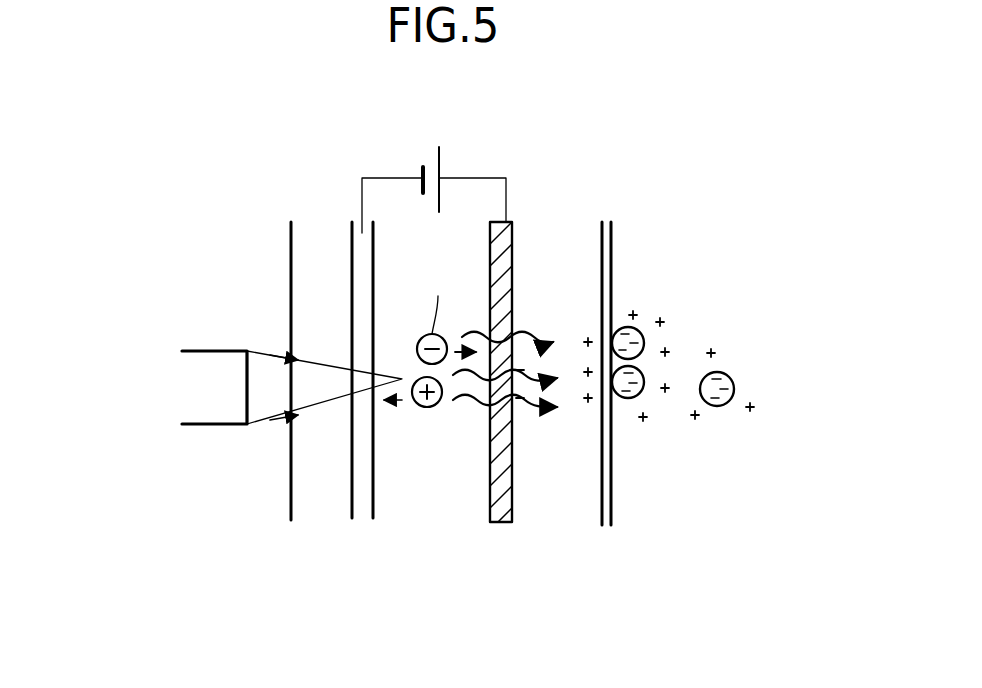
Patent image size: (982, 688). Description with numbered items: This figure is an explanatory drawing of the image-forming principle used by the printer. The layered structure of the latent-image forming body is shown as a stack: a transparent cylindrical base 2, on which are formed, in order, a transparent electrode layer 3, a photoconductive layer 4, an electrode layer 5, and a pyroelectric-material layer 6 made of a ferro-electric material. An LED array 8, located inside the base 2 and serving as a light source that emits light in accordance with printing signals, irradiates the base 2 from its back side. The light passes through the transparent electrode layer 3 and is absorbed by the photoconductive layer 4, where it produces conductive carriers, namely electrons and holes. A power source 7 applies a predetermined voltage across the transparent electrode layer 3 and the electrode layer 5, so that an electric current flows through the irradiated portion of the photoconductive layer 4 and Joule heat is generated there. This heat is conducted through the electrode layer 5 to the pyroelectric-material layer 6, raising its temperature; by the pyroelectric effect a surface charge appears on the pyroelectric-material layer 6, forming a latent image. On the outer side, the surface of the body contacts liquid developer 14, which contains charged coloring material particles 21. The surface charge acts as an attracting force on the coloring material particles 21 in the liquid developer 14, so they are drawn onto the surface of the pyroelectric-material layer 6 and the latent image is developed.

The transparent cylindrical base 2 is at (317, 503).
The transparent electrode layer 3 is at (360, 508).
The photoconductive layer 4 is at (437, 503).
The electrode layer 5 is at (503, 510).
The pyroelectric-material layer 6 is at (563, 502).
The power source 7 is at (430, 153).
The LED array 8 is at (203, 424).
The liquid developer 14 is at (687, 507).
The coloring material particles 21 is at (625, 402).